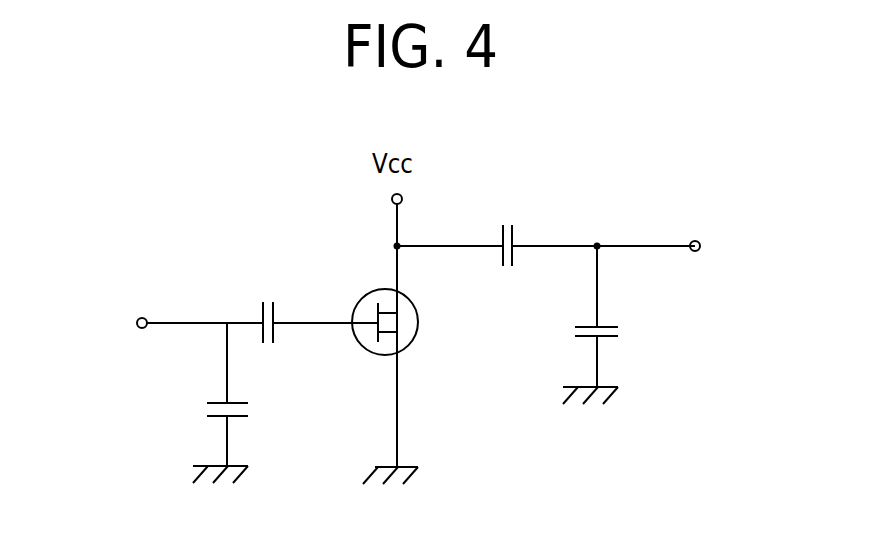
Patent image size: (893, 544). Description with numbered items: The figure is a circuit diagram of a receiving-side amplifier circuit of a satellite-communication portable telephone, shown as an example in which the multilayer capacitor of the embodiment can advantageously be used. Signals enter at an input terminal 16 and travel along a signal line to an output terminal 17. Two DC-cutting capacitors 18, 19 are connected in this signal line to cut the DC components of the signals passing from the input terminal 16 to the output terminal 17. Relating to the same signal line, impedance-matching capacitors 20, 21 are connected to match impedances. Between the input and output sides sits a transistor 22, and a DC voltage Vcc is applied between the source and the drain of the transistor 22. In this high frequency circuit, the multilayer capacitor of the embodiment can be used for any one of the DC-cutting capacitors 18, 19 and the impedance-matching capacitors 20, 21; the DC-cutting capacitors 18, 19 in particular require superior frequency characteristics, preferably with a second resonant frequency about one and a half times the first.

The input terminal 16 is at (140, 329).
The output terminal 17 is at (697, 252).
The DC-cutting capacitor 18 is at (265, 300).
The DC-cutting capacitor 19 is at (510, 222).
The impedance-matching capacitor 20 is at (207, 415).
The impedance-matching capacitor 21 is at (618, 334).
The transistor 22 is at (418, 322).